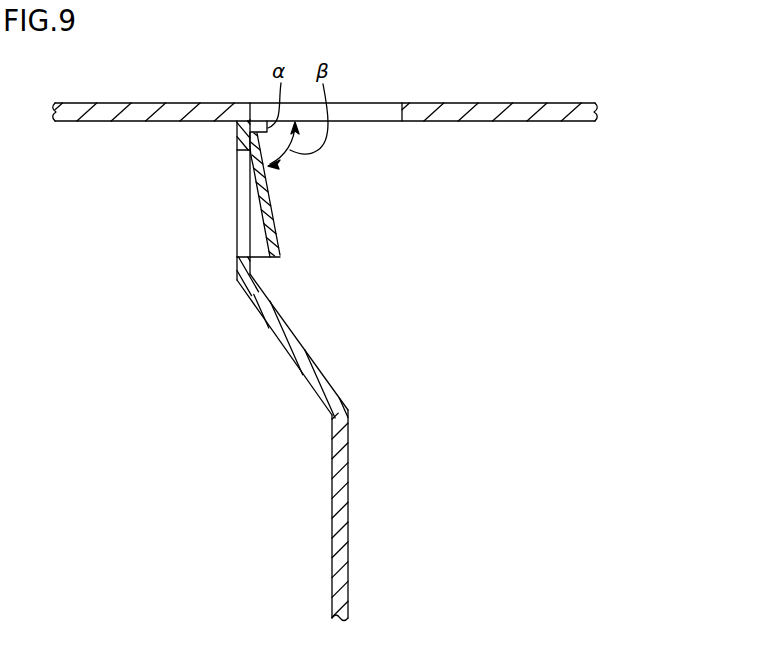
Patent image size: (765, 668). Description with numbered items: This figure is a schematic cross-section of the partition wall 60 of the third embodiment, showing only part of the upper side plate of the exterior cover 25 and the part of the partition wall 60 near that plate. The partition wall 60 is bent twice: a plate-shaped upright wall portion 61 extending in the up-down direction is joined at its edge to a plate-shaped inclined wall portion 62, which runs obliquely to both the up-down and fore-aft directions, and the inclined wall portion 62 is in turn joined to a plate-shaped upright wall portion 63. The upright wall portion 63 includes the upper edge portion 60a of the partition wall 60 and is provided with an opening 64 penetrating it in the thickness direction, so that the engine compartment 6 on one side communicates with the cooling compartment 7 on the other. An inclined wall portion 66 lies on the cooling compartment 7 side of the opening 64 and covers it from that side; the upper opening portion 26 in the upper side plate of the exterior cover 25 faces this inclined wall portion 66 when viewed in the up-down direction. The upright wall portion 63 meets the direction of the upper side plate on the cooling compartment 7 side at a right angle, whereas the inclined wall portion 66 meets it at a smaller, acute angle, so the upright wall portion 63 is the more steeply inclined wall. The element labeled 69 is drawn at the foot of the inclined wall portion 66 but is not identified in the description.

The exterior cover 25 is at (152, 112).
The upper opening portion 26 is at (372, 112).
The partition wall 60 is at (291, 340).
The upper edge portion 60a is at (243, 128).
The opening 64 is at (243, 197).
The inclined wall portion 66 is at (268, 238).
The step surface 69 is at (262, 259).
The upright wall portion 63 is at (237, 270).
The inclined wall portion 62 is at (293, 361).
The upright wall portion 61 is at (340, 515).
The engine compartment 6 is at (146, 451).
The cooling compartment 7 is at (499, 451).